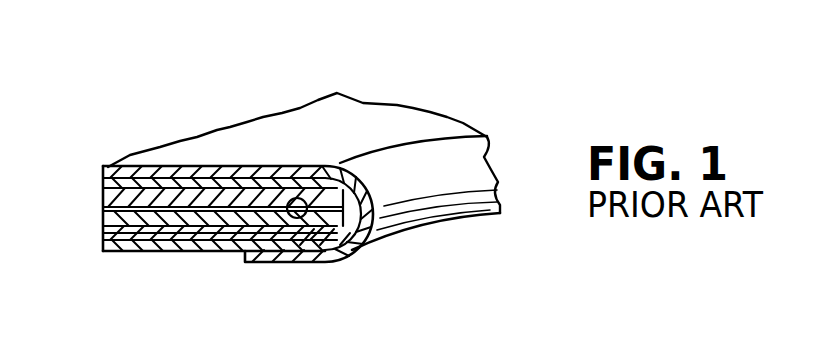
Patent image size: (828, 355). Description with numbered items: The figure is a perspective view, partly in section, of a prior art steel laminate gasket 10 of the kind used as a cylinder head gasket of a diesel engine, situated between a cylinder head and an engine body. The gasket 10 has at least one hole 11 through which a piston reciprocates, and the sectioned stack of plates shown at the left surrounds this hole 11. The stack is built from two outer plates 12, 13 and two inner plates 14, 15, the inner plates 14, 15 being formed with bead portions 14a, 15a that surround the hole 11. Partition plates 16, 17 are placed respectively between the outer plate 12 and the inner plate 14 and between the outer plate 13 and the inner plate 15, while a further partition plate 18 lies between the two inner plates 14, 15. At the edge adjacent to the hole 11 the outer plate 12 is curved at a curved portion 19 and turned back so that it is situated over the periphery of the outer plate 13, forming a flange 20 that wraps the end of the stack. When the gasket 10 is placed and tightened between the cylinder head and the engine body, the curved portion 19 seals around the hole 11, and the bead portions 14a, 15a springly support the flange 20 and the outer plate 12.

The steel laminate gasket 10 is at (392, 84).
The hole 11 is at (427, 223).
The outer plate 12 is at (158, 150).
The outer plate 13 is at (212, 238).
The inner plate 14 is at (106, 200).
The bead portion 14a is at (305, 187).
The inner plate 15 is at (142, 223).
The bead portion 15a is at (297, 227).
The partition plate 16 is at (108, 168).
The partition plate 17 is at (163, 232).
The partition plate 18 is at (107, 237).
The curved portion 19 is at (466, 173).
The flange 20 is at (322, 255).